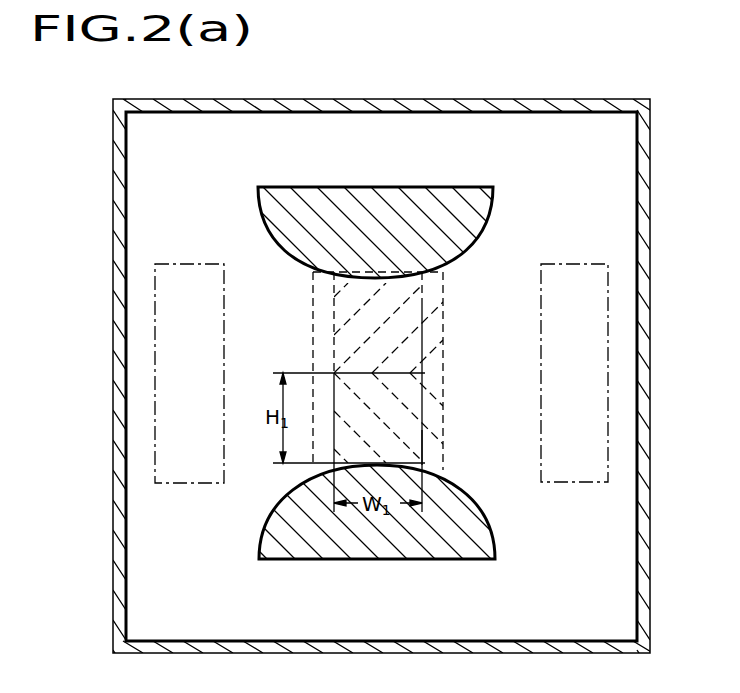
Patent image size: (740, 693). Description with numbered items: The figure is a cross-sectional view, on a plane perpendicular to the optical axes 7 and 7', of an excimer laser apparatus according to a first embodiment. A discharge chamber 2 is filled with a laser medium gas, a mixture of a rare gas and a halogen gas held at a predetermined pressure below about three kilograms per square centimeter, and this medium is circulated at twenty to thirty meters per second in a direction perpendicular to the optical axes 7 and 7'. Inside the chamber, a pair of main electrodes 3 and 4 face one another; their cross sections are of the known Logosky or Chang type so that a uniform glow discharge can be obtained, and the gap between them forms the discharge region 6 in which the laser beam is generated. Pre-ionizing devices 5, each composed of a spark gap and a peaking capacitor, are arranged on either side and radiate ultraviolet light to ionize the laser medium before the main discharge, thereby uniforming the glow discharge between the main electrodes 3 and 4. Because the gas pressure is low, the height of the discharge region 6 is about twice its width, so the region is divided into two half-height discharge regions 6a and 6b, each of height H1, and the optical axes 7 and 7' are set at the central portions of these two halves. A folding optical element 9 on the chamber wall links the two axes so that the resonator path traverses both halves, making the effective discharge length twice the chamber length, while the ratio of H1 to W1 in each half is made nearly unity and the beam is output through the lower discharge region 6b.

The discharge chamber 2 is at (470, 106).
The main electrode 3 is at (407, 195).
The main electrode 4 is at (401, 540).
The pre-ionizing device 5 is at (155, 351).
The discharge region 6 is at (426, 312).
The discharge region 6a is at (420, 368).
The discharge region 6b is at (430, 462).
The optical axis 7 is at (408, 328).
The optical axis 7' is at (411, 418).
The folding optical element 9 is at (414, 432).